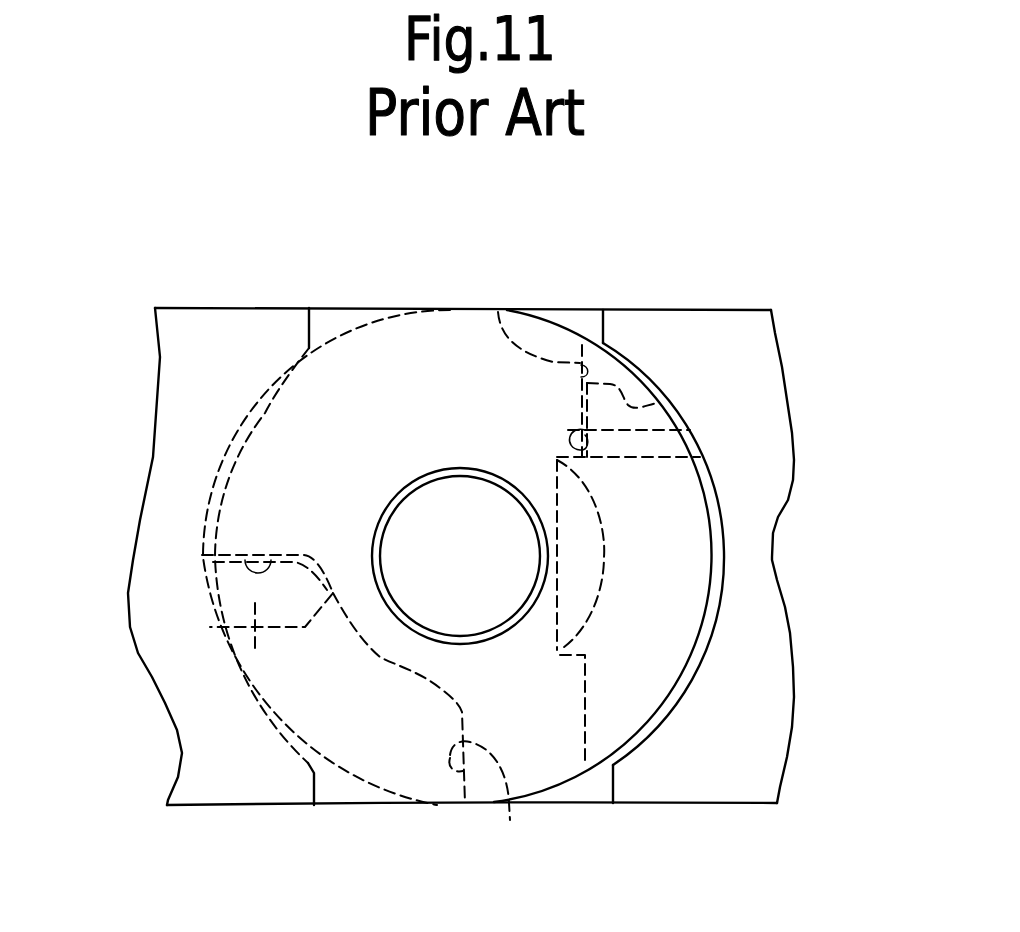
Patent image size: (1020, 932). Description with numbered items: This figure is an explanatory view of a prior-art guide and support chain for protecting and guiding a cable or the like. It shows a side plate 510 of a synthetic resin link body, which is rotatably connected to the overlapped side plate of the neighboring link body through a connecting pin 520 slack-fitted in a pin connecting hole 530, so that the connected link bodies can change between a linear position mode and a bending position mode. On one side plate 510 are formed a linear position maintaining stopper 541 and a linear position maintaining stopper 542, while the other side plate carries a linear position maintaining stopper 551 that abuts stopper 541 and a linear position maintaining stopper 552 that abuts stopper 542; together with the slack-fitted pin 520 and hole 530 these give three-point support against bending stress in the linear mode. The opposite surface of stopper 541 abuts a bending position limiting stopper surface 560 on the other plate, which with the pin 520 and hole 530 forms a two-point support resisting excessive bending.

The side plate 510 is at (240, 300).
The connecting pin 520 is at (498, 623).
The pin connecting hole 530 is at (446, 480).
The linear position maintaining stopper 541 is at (255, 645).
The linear position maintaining stopper 542 is at (675, 430).
The linear position maintaining stopper 551 is at (277, 555).
The linear position maintaining stopper 552 is at (498, 312).
The bending position limiting stopper surface 560 is at (510, 820).